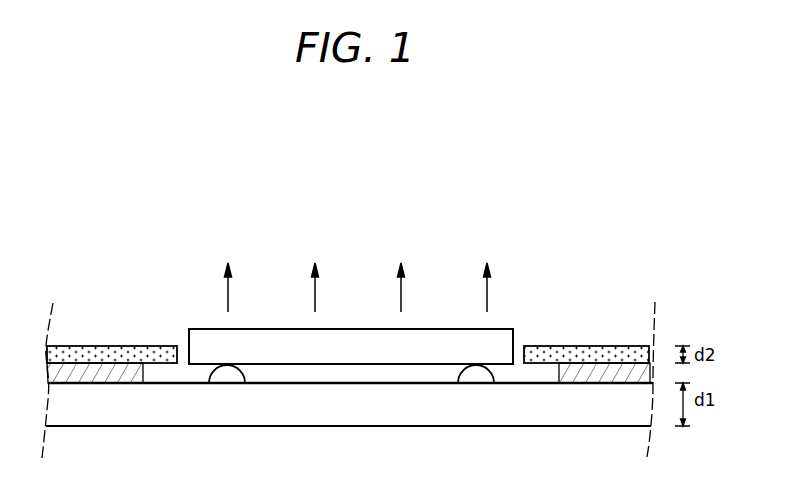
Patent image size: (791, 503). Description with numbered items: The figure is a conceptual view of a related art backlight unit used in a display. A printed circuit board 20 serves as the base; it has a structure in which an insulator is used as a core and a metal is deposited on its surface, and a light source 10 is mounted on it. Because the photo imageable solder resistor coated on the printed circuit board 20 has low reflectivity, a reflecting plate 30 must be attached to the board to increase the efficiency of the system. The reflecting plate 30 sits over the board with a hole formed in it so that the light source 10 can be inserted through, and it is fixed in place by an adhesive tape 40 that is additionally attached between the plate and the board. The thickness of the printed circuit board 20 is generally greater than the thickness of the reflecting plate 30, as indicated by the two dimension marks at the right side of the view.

The light source 10 is at (489, 337).
The printed circuit board 20 is at (538, 415).
The reflecting plate 30 is at (598, 353).
The adhesive tape 40 is at (638, 373).